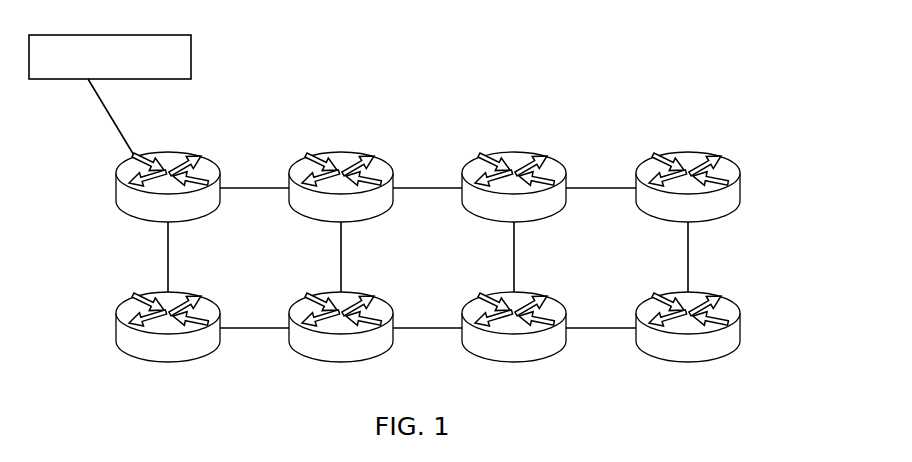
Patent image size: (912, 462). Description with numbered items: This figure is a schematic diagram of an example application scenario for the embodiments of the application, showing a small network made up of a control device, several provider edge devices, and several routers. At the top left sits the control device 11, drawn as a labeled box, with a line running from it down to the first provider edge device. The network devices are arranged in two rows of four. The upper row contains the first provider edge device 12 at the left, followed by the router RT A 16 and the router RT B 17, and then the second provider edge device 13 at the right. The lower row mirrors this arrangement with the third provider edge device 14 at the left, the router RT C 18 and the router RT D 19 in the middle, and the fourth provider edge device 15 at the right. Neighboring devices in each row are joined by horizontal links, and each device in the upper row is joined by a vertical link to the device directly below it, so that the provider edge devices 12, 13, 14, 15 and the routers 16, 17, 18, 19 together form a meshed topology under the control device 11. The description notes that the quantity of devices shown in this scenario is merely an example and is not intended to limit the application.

The control device 11 is at (157, 35).
The provider edge device PE 1 12 is at (200, 153).
The provider edge device PE 2 13 is at (728, 157).
The provider edge device PE 3 14 is at (200, 292).
The provider edge device PE 4 15 is at (730, 298).
The router RT A 16 is at (381, 152).
The router RT B 17 is at (554, 152).
The router RT C 18 is at (373, 292).
The router RT D 19 is at (552, 292).